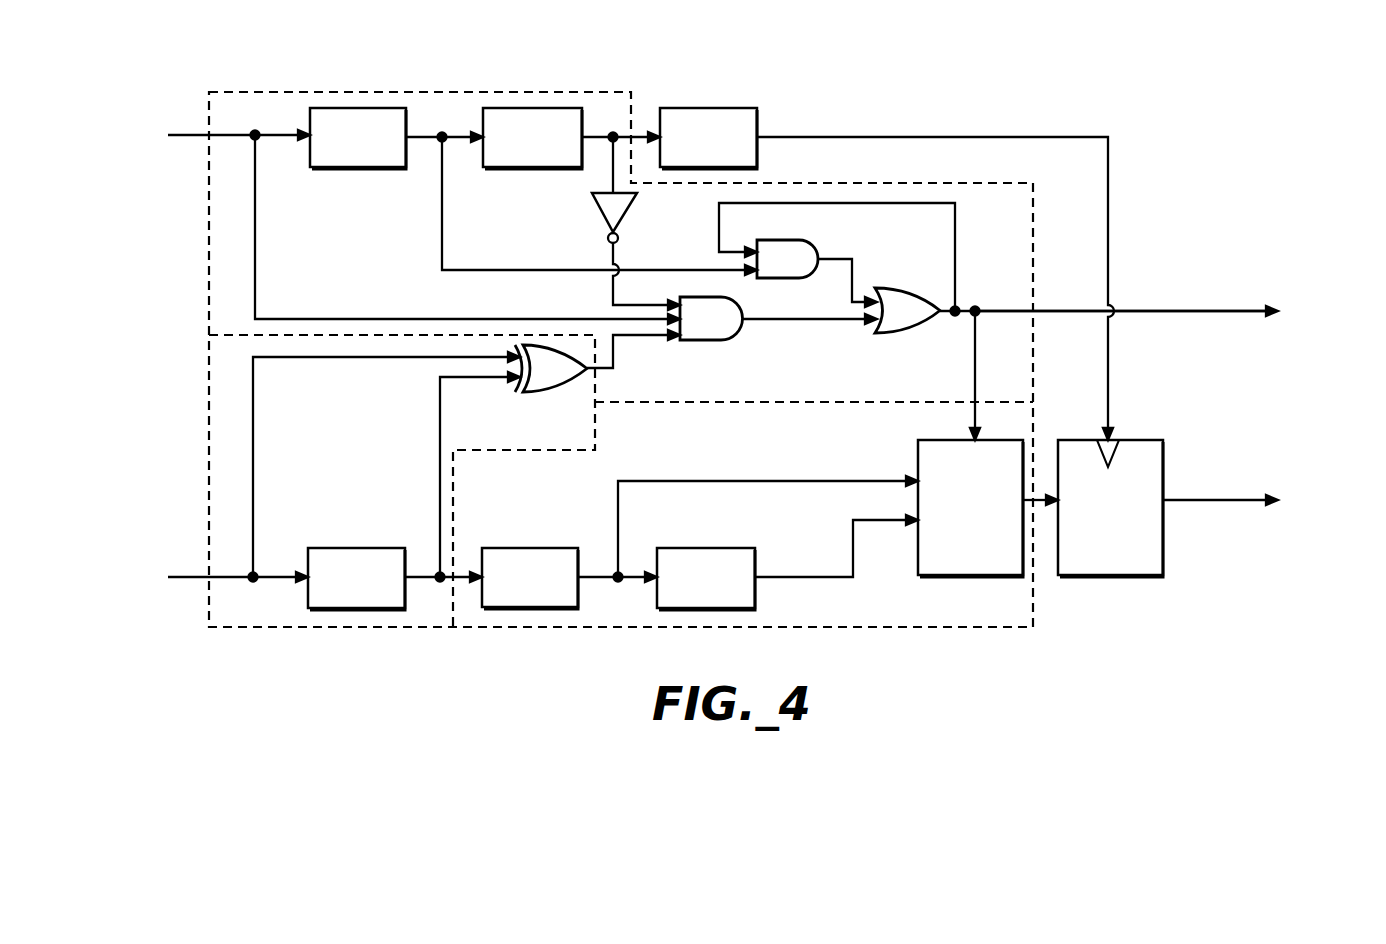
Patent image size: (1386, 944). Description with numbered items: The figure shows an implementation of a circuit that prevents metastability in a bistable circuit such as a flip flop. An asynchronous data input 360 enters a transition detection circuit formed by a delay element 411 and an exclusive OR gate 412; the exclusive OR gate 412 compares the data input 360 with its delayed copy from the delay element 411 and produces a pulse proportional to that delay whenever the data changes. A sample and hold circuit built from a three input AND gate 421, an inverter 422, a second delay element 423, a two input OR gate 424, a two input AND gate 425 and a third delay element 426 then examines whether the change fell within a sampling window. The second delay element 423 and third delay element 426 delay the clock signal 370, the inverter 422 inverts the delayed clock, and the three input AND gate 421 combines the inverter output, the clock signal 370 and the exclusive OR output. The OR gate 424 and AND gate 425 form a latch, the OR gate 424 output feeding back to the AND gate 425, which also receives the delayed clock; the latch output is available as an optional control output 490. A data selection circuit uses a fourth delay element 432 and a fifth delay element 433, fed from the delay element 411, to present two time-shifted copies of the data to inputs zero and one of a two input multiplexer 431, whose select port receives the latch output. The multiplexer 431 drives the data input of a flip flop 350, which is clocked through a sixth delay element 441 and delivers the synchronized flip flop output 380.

The clock signal 370 is at (240, 138).
The data input 360 is at (236, 577).
The third delay element 426 is at (388, 170).
The second delay element 423 is at (548, 170).
The sixth delay element 441 is at (760, 145).
The inverter 422 is at (600, 213).
The two input AND gate 425 is at (815, 245).
The three input AND gate 421 is at (702, 343).
The two input OR gate 424 is at (893, 337).
The exclusive OR gate 412 is at (540, 395).
The delay element 411 is at (343, 548).
The fourth delay element 432 is at (518, 548).
The fifth delay element 433 is at (705, 548).
The two input multiplexer 431 is at (1003, 578).
The flip flop 350 is at (1132, 440).
The control output 490 is at (1155, 312).
The flip flop output 380 is at (1193, 501).